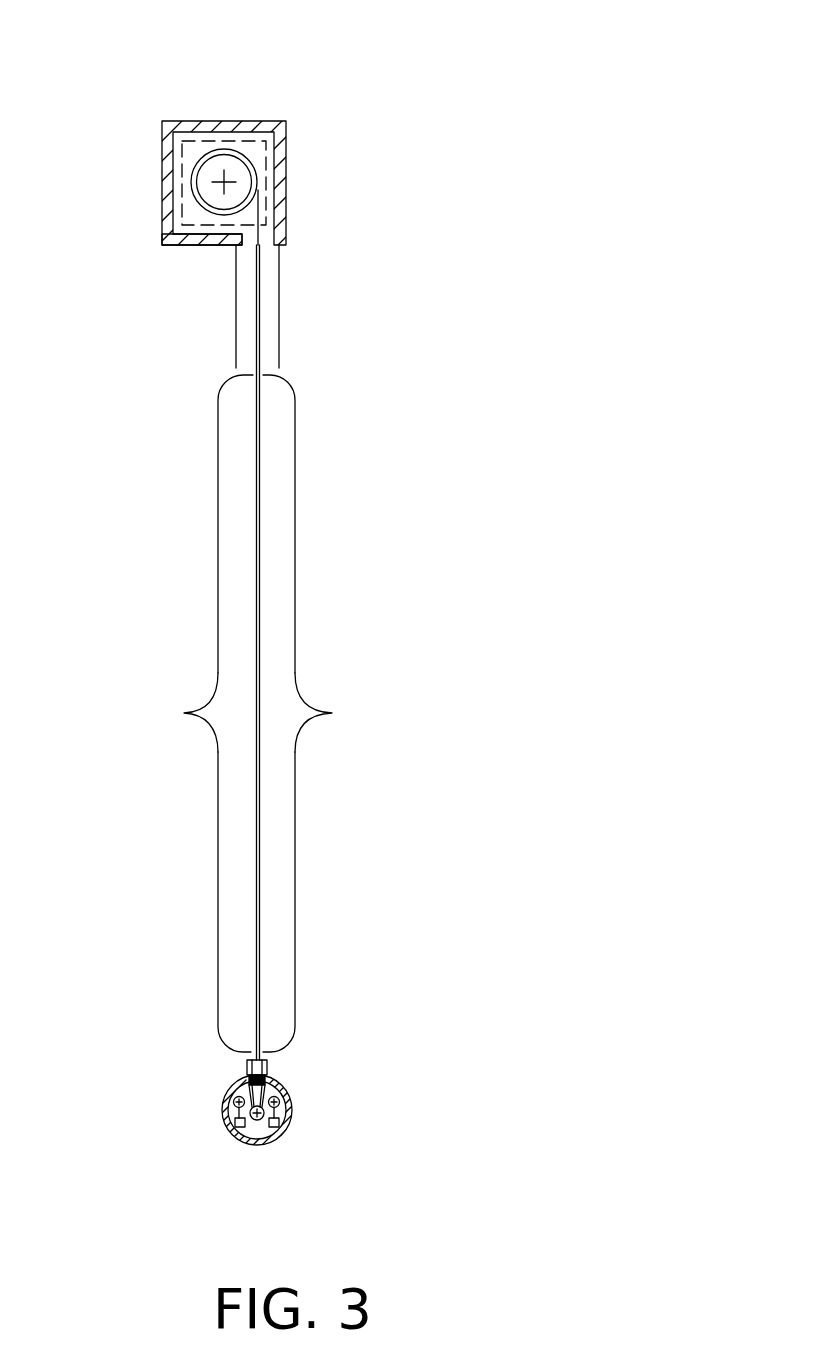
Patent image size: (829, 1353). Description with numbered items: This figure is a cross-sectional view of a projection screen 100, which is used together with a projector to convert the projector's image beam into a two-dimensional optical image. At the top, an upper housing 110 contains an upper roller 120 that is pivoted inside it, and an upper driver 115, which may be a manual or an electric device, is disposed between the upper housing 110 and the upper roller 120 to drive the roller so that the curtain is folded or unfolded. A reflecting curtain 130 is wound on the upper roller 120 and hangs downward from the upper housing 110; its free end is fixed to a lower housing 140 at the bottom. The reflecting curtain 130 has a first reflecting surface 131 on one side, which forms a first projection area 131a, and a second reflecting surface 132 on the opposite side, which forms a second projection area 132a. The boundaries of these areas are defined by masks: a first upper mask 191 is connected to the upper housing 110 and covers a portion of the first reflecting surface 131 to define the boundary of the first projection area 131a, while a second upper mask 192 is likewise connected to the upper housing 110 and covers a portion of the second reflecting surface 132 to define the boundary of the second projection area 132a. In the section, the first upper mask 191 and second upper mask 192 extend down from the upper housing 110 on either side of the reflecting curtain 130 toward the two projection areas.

The projection screen 100 is at (306, 118).
The upper housing 110 is at (285, 210).
The upper driver 115 is at (210, 237).
The upper roller 120 is at (211, 197).
The reflecting curtain 130 is at (259, 628).
The first reflecting surface 131 is at (326, 713).
The first projection area 131a is at (345, 712).
The second reflecting surface 132 is at (185, 713).
The second projection area 132a is at (169, 712).
The lower housing 140 is at (292, 1107).
The first upper mask 191 is at (279, 323).
The second upper mask 192 is at (236, 325).